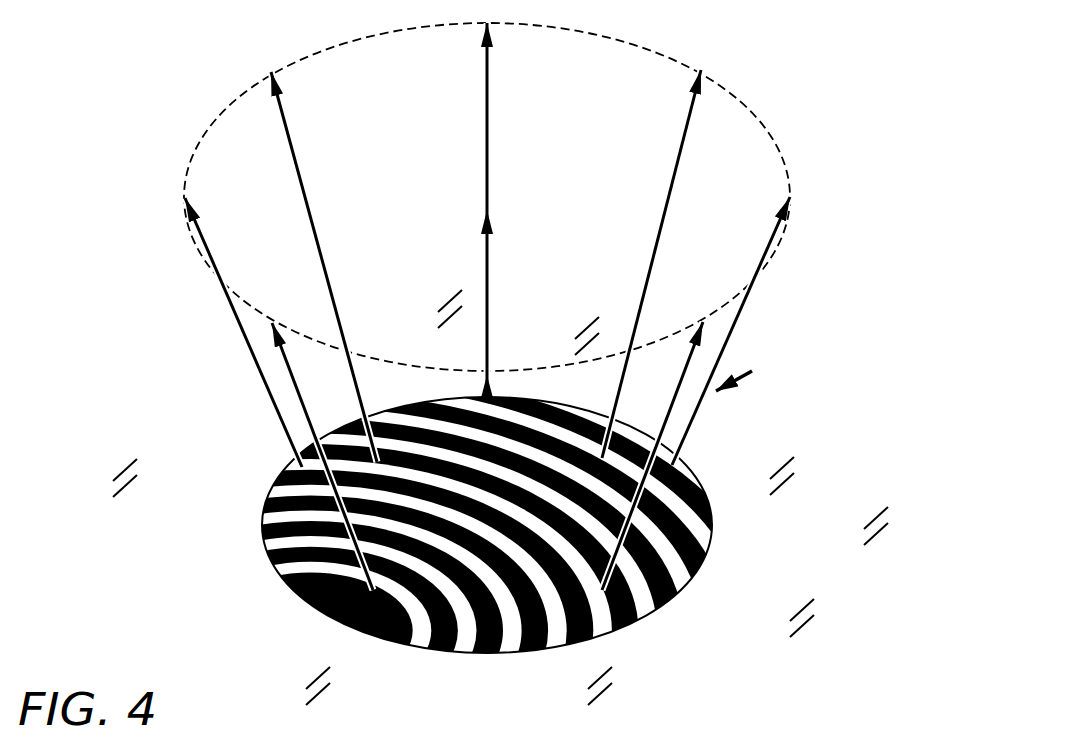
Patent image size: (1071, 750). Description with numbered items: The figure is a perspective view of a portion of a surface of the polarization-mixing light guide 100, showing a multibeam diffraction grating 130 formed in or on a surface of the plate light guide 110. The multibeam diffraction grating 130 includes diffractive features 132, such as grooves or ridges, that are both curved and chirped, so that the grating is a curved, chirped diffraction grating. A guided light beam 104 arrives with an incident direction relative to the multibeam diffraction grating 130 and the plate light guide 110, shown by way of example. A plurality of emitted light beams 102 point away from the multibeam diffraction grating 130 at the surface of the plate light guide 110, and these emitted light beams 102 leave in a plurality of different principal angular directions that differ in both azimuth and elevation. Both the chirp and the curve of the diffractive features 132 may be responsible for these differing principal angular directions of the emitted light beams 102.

The polarization-mixing light guide 100 is at (815, 106).
The emitted light beams 102 is at (492, 88).
The guided light beam 104 is at (750, 373).
The plate light guide 110 is at (805, 588).
The multibeam diffraction grating 130 is at (264, 466).
The diffractive features 132 is at (638, 613).